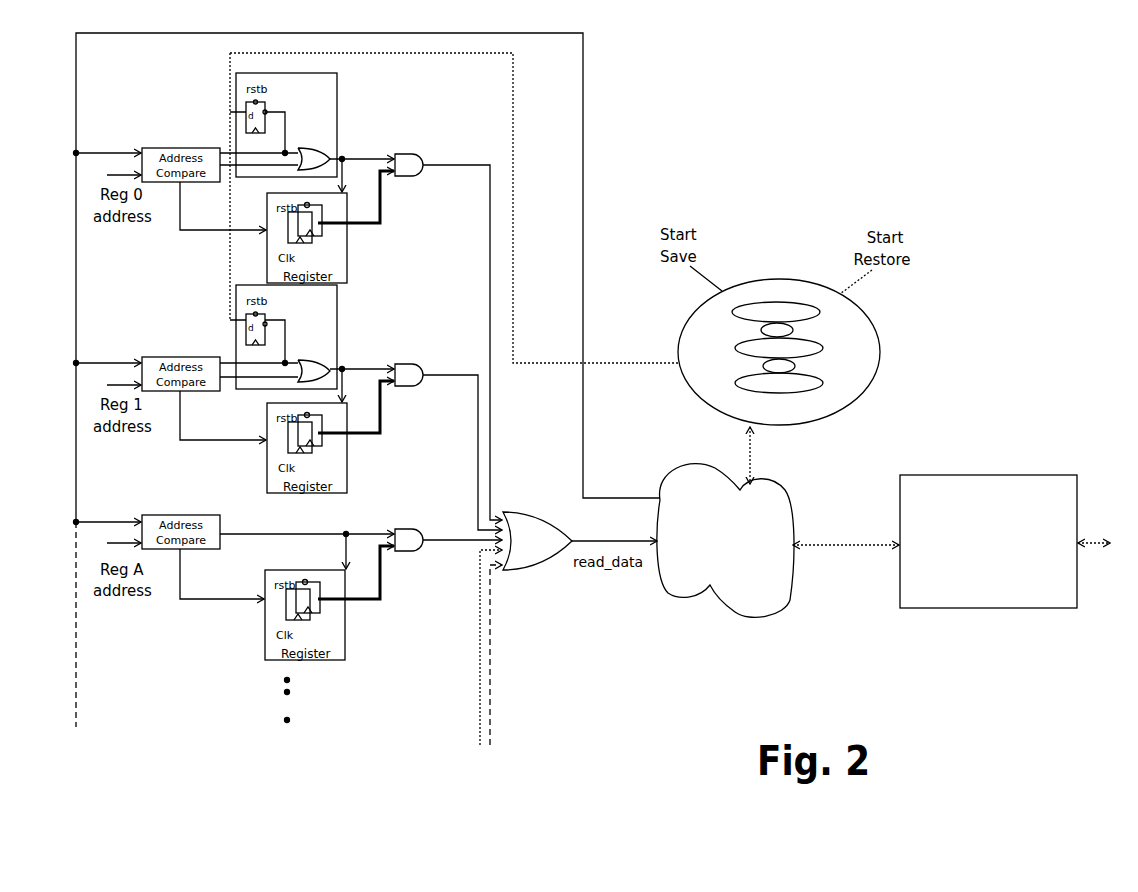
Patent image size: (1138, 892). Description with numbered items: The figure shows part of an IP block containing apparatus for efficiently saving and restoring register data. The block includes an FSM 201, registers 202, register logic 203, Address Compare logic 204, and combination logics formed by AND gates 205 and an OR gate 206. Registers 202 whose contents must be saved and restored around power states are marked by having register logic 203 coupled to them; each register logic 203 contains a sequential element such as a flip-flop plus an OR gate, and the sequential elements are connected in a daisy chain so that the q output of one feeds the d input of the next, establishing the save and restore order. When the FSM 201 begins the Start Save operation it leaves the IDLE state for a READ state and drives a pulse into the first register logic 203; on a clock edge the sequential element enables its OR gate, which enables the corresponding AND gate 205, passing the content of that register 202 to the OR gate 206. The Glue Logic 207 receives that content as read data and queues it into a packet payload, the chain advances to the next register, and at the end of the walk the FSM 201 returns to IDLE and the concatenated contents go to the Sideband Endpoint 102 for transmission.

The FSM 201 is at (778, 278).
The register 202 is at (347, 257).
The register logic 203 is at (286, 231).
The Address Compare logic 204 is at (168, 147).
The AND gate 205 is at (412, 153).
The OR gate 206 is at (532, 573).
The Glue Logic 207 is at (728, 617).
The Sideband Endpoint 102 is at (988, 541).